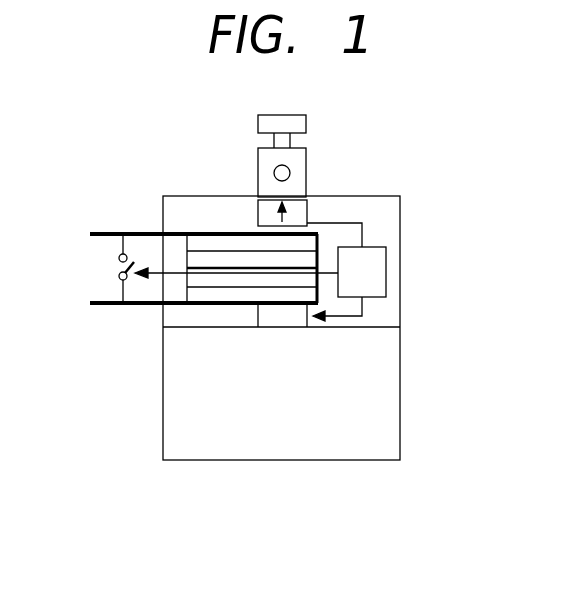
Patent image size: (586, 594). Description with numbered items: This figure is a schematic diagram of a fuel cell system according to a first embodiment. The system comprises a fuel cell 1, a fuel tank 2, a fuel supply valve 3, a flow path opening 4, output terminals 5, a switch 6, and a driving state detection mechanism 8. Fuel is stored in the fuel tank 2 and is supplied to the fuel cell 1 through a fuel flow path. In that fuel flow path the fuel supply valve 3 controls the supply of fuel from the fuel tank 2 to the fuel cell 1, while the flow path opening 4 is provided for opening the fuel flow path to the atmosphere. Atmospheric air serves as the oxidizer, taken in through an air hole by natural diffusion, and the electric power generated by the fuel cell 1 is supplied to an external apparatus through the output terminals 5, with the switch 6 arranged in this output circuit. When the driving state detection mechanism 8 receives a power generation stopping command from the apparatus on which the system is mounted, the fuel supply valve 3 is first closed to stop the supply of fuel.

The fuel cell 1 is at (307, 250).
The fuel tank 2 is at (380, 398).
The fuel supply valve 3 is at (282, 322).
The flow path opening 4 is at (291, 173).
The output terminals 5 is at (102, 232).
The switch 6 is at (118, 267).
The driving state detection mechanism 8 is at (375, 273).